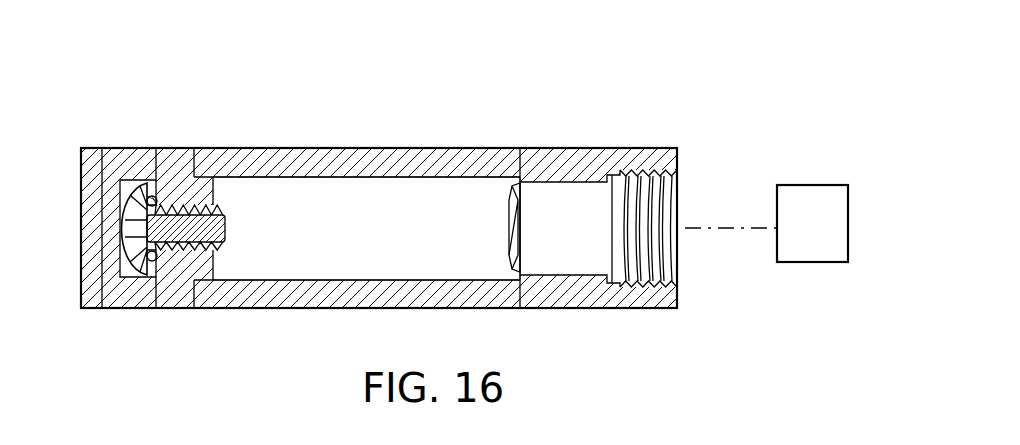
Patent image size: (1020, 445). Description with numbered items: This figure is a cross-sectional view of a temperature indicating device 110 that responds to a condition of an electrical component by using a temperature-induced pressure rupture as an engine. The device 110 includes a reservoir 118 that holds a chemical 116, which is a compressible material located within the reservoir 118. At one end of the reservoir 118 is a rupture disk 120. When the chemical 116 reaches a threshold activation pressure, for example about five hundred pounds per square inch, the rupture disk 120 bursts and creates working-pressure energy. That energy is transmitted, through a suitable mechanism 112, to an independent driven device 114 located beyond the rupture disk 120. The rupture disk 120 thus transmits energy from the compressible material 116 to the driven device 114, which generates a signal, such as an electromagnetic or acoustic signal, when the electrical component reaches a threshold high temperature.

The temperature indicating device 110 is at (478, 123).
The mechanism 112 is at (723, 228).
The independent device 114 is at (813, 205).
The chemical 116 is at (377, 236).
The reservoir 118 is at (265, 267).
The rupture disk 120 is at (518, 227).